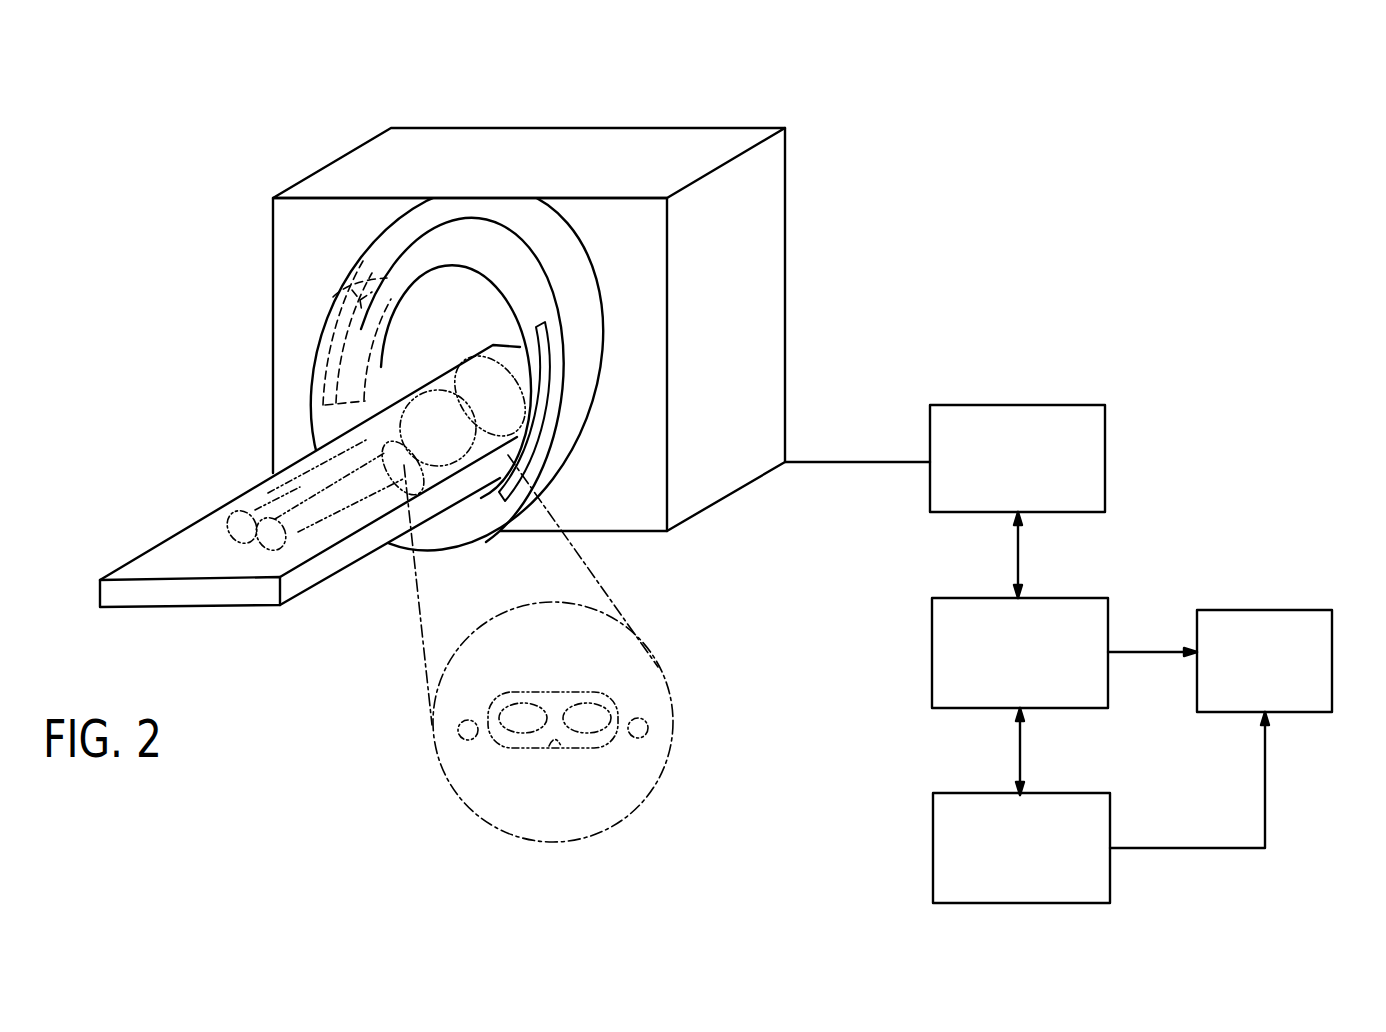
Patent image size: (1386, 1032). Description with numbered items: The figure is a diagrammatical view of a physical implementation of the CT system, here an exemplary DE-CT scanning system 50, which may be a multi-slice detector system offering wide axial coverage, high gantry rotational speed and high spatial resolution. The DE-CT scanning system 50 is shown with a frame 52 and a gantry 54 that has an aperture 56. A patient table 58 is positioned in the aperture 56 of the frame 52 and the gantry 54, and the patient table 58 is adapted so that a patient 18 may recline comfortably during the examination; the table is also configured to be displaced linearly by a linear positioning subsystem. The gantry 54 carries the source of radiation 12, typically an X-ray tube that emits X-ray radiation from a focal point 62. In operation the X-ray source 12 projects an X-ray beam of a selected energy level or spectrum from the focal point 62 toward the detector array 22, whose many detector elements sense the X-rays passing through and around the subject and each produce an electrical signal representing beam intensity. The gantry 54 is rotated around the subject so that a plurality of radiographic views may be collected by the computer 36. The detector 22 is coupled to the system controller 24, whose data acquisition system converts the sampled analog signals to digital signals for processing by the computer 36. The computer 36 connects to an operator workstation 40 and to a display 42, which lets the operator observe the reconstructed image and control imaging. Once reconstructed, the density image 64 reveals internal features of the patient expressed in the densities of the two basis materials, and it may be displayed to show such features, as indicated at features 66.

The DE-CT scanning system 50 is at (728, 88).
The frame 52 is at (770, 212).
The gantry 54 is at (435, 235).
The aperture 56 is at (455, 307).
The focal point 62 is at (343, 300).
The source of radiation 12 is at (330, 347).
The detector 22 is at (550, 403).
The patient 18 is at (258, 479).
The patient table 58 is at (240, 592).
The system controller 24 is at (1107, 458).
The computer 36 is at (930, 653).
The display 42 is at (1333, 645).
The operator workstation 40 is at (932, 838).
The density image 64 is at (660, 771).
The features 66 is at (612, 702).